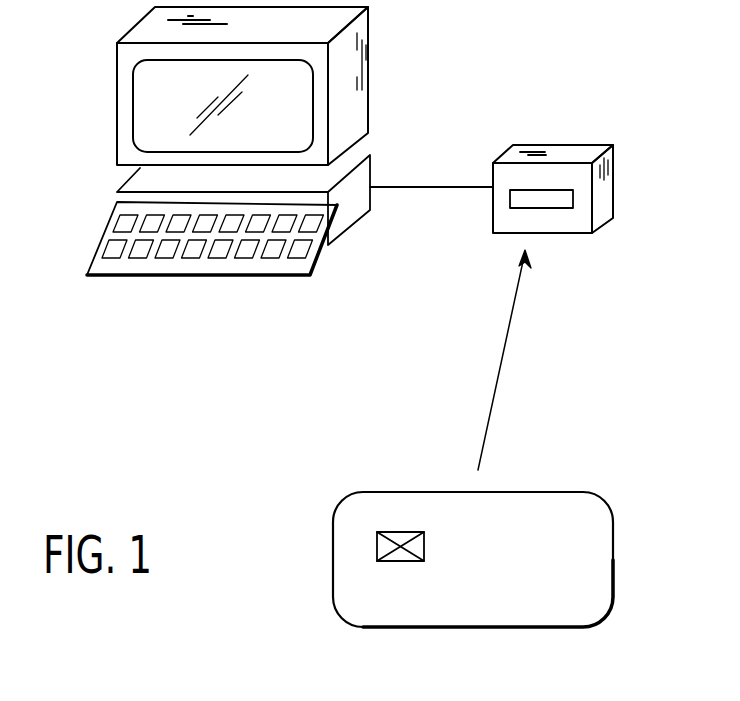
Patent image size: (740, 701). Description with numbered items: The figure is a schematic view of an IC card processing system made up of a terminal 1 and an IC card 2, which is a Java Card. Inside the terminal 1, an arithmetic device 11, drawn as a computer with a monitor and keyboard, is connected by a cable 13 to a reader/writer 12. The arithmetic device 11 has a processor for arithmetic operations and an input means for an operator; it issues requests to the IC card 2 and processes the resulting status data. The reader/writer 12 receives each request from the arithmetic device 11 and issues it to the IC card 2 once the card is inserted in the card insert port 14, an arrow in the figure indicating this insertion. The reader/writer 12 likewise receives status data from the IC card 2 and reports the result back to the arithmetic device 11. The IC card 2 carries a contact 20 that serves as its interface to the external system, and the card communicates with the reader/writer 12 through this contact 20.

The terminal 1 is at (460, 70).
The arithmetic device 11 is at (120, 65).
The reader/writer 12 is at (614, 183).
The cable 13 is at (427, 188).
The card insert port 14 is at (558, 209).
The IC card 2 is at (614, 558).
The contact 20 is at (377, 548).